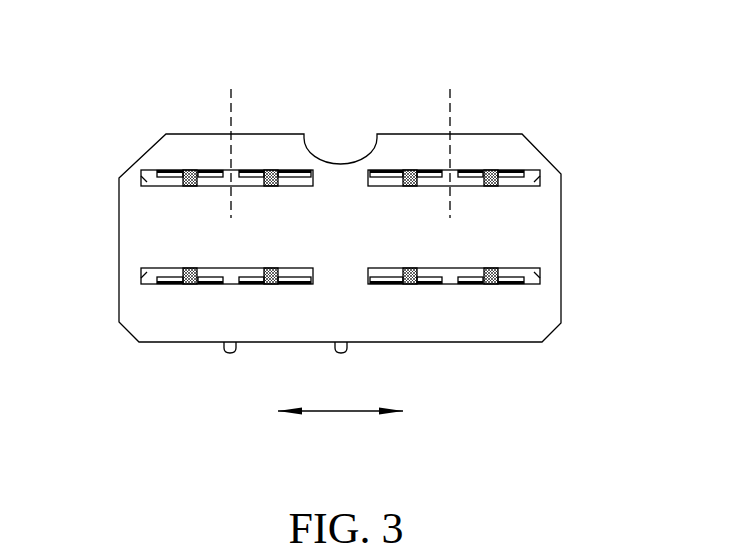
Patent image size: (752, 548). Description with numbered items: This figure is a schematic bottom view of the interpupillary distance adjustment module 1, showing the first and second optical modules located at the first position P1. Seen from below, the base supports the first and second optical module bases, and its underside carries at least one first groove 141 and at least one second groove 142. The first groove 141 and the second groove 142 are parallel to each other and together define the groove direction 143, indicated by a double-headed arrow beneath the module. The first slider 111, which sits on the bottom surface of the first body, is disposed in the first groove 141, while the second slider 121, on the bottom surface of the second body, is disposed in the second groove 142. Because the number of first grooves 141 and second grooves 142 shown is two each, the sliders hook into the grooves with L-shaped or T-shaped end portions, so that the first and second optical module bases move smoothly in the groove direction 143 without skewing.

The interpupillary distance adjustment module 1 is at (345, 103).
The first slider 111 is at (188, 171).
The second slider 121 is at (498, 170).
The first groove 141 is at (145, 178).
The second groove 142 is at (536, 178).
The groove direction 143 is at (342, 412).
The first position P1 is at (342, 131).